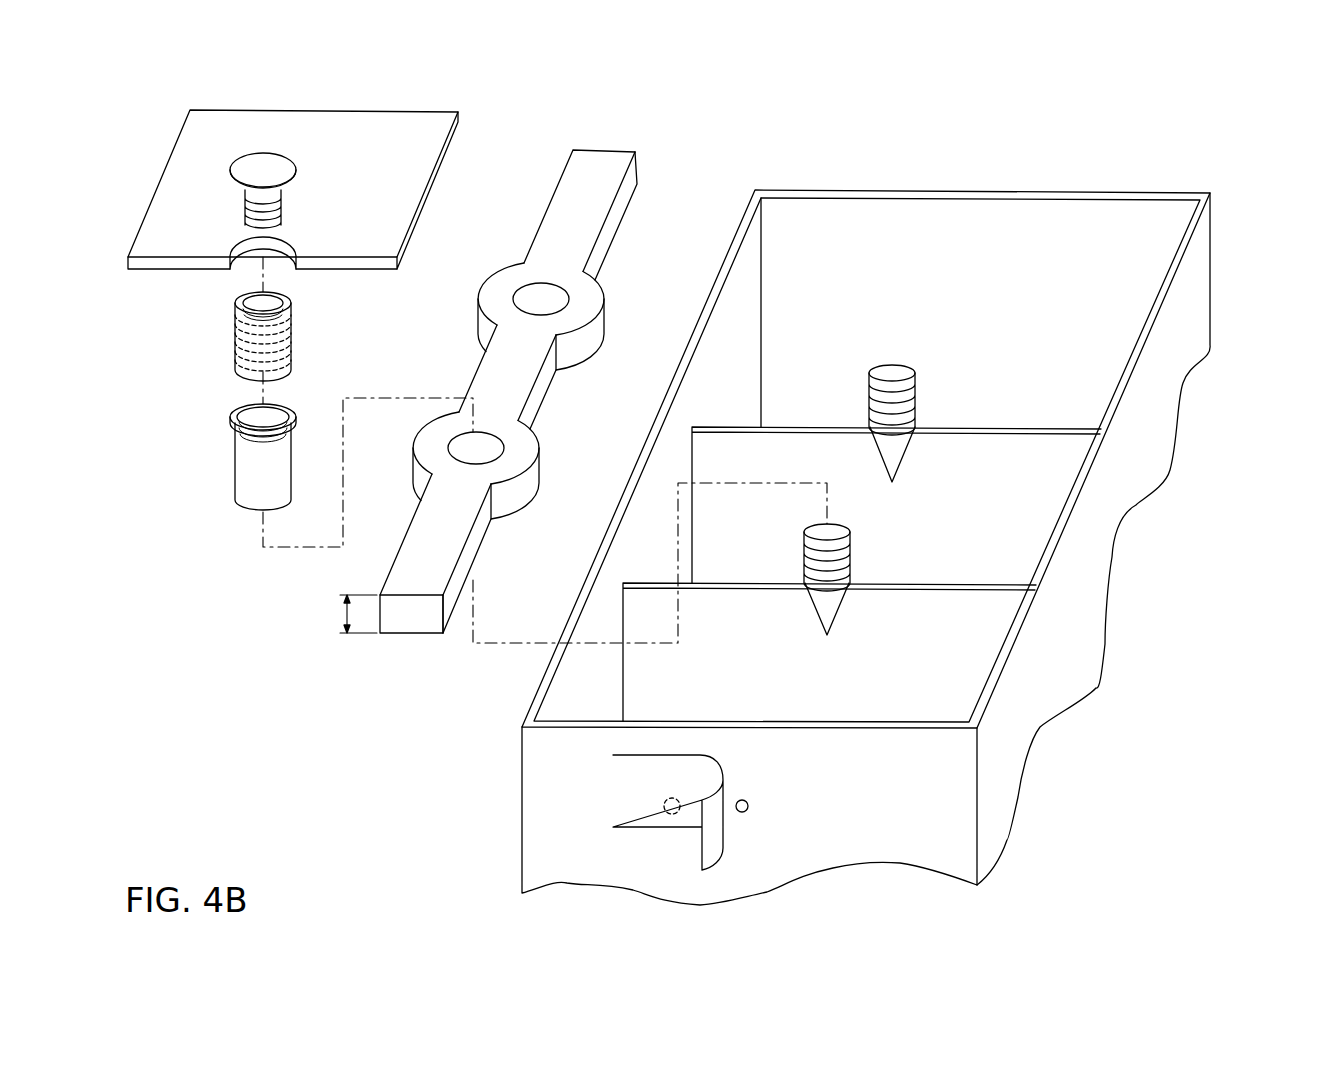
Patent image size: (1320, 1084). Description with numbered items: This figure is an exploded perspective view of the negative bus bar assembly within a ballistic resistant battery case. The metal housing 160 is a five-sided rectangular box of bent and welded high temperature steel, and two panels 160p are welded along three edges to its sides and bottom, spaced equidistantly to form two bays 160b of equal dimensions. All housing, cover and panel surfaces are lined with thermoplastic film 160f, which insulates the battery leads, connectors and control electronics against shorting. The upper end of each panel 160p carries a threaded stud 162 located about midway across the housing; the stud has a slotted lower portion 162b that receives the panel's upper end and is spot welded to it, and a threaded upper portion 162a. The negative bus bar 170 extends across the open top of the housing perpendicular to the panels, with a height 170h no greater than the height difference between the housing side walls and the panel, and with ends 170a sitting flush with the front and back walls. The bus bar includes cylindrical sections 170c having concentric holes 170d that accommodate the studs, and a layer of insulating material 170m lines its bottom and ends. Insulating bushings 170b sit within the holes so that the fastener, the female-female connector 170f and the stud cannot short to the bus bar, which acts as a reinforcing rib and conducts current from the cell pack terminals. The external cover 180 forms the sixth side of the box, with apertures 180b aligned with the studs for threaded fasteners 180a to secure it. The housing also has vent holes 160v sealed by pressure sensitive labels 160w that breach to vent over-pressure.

The metal housing 160 is at (855, 528).
The thermoplastic film 160f is at (447, 167).
The bays 160b is at (1105, 344).
The panels 160p is at (1064, 464).
The pressure sensitive labels 160w is at (623, 798).
The vent holes 160v is at (667, 814).
The threaded stud 162 is at (910, 544).
The threaded upper portion 162a is at (890, 366).
The slotted lower portion 162b is at (832, 598).
The negative bus bar 170 is at (461, 406).
The ends 170a is at (640, 157).
The insulating bushings 170b is at (243, 472).
The cylindrical sections 170c is at (474, 323).
The holes 170d is at (545, 290).
The female-female connector 170f is at (247, 338).
The height 170h is at (340, 612).
The insulating material 170m is at (452, 616).
The external cover 180 is at (310, 183).
The threaded fasteners 180a is at (261, 157).
The apertures 180b is at (237, 258).